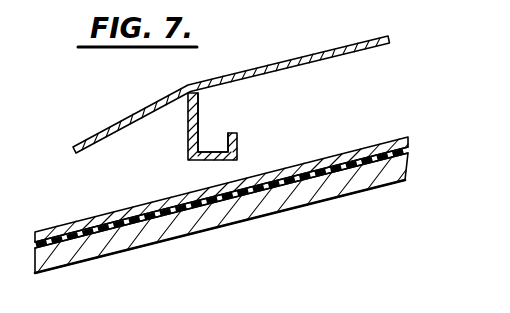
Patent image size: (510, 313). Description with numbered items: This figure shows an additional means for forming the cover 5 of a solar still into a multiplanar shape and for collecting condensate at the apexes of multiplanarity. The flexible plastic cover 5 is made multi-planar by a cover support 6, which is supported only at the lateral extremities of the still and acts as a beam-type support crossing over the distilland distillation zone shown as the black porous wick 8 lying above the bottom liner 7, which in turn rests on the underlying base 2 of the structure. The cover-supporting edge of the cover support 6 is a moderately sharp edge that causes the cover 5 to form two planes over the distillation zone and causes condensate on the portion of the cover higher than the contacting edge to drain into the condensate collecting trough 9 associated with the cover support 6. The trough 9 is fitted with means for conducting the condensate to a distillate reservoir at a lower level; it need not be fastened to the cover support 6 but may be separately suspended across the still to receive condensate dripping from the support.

The base layer 2 is at (163, 230).
The cover 5 is at (307, 55).
The cover support 6 is at (187, 132).
The bottom liner 7 is at (100, 230).
The black porous wick 8 is at (285, 172).
The condensate collecting trough 9 is at (212, 147).